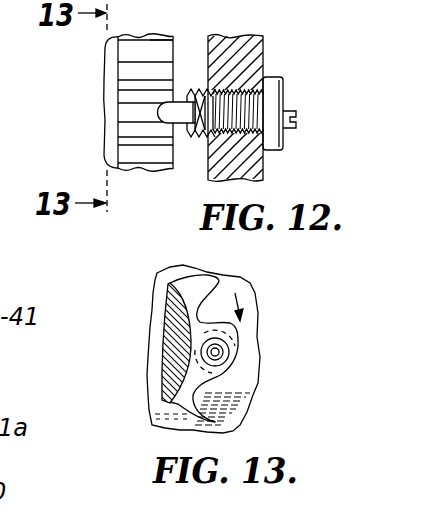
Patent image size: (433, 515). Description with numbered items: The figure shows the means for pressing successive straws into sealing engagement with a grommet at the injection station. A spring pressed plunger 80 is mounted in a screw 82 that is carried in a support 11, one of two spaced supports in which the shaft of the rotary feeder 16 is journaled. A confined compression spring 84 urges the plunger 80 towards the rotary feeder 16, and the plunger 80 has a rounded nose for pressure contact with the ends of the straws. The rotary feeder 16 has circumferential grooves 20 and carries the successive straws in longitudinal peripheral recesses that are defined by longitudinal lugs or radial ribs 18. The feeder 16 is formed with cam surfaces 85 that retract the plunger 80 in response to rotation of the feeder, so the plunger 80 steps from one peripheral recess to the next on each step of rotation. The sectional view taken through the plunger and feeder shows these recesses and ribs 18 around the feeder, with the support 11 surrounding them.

In FIG. 12, the support 11 is at (258, 163).
In FIG. 13, the support 11 is at (153, 408).
In FIG. 12, the rotary feeder 16 is at (100, 111).
In FIG. 13, the longitudinal lugs or radial ribs 18 is at (198, 292).
In FIG. 12, the circumferential grooves 20 is at (111, 80).
In FIG. 12, the spring pressed plunger 80 is at (176, 104).
In FIG. 13, the spring pressed plunger 80 is at (221, 348).
In FIG. 12, the screw 82 is at (218, 88).
In FIG. 13, the screw 82 is at (236, 360).
In FIG. 12, the confined compression spring 84 is at (201, 136).
In FIG. 12, the cam surfaces 85 is at (172, 52).